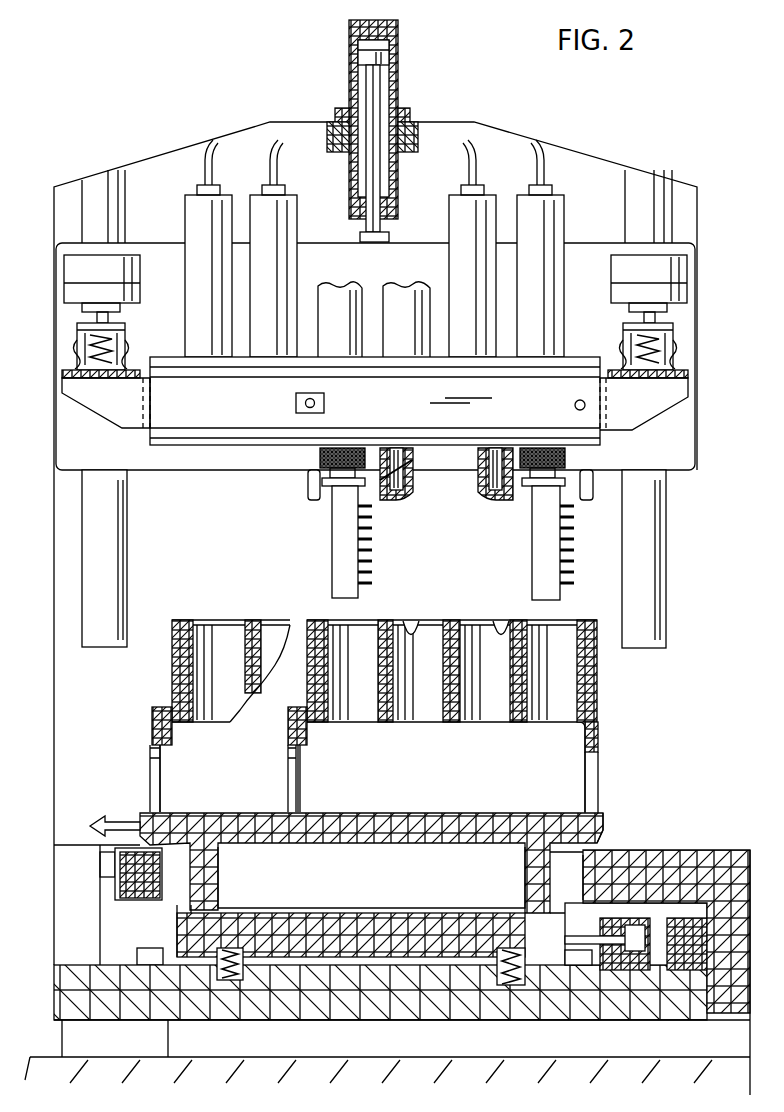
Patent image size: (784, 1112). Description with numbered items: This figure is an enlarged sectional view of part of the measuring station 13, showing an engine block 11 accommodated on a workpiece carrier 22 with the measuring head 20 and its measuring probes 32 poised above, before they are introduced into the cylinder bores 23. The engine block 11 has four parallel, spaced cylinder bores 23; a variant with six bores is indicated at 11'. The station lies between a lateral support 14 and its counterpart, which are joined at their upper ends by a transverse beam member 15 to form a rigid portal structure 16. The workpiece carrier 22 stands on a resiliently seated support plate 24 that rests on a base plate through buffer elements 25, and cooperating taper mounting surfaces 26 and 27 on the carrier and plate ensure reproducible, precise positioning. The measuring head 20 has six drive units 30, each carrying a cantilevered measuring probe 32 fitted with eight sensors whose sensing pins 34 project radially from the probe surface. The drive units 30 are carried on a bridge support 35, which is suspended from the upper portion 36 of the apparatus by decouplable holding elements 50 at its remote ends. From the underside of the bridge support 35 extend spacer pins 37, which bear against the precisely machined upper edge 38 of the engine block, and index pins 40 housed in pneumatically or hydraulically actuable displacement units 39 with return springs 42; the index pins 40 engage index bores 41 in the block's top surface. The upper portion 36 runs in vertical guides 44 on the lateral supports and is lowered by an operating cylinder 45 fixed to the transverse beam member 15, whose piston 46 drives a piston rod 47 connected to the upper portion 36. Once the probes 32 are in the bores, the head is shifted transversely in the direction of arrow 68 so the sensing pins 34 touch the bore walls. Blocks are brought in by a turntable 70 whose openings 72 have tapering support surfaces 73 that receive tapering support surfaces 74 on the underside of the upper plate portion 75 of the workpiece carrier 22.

The engine block 11 is at (472, 716).
The engine block having six cylinder bores 11' is at (196, 671).
The measuring station 13 is at (128, 750).
The lateral support 14 is at (55, 530).
The transverse beam member 15 is at (420, 138).
The portal structure 16 is at (500, 157).
The measuring head 20 is at (258, 160).
The workpiece carrier 22 is at (458, 812).
The cylinder bore 23 is at (598, 700).
The support plate 24 is at (357, 930).
The buffer element 25 is at (245, 970).
The taper mounting surface 26 is at (548, 915).
The taper mounting surface 27 is at (190, 918).
The drive unit 30 is at (568, 218).
The measuring probe 32 is at (330, 575).
The sensing pin 34 is at (375, 558).
The bridge support 35 is at (107, 425).
The upper portion of the apparatus 36 is at (163, 240).
The spacer pin 37 is at (305, 488).
The upper edge of the engine block 38 is at (567, 622).
The displacement unit 39 is at (413, 497).
The index pin 40 is at (495, 500).
The index bore 41 is at (497, 620).
The return spring 42 is at (405, 466).
The guide 44 is at (80, 578).
The operating cylinder 45 is at (402, 82).
The piston 46 is at (380, 50).
The piston rod 47 is at (366, 88).
The holding element 50 is at (677, 330).
The arrow 68 is at (113, 816).
The turntable 70 is at (730, 848).
The opening 72 is at (187, 887).
The support surface 73 is at (588, 858).
The support surface 74 is at (605, 843).
The upper plate portion 75 is at (607, 820).